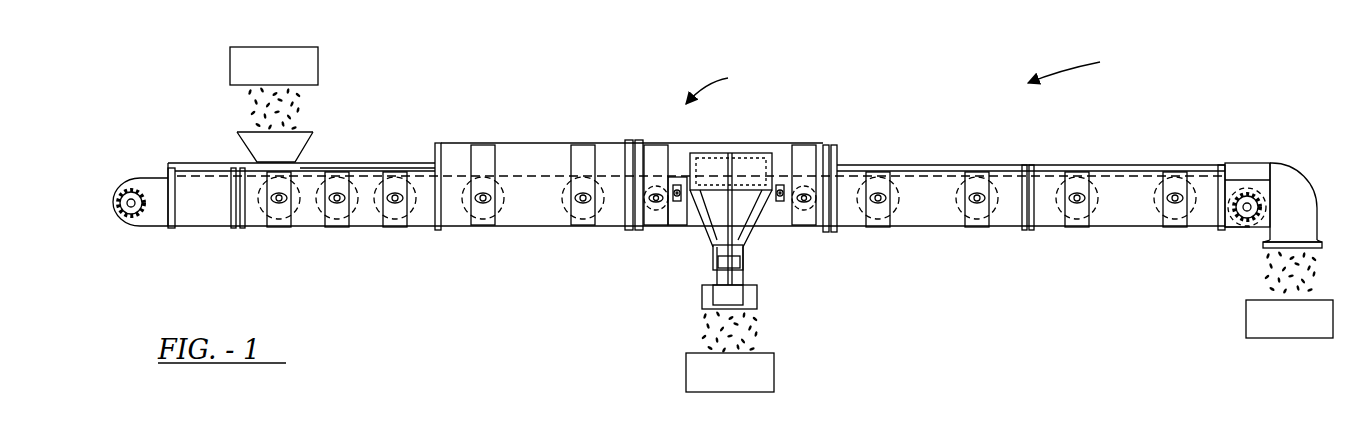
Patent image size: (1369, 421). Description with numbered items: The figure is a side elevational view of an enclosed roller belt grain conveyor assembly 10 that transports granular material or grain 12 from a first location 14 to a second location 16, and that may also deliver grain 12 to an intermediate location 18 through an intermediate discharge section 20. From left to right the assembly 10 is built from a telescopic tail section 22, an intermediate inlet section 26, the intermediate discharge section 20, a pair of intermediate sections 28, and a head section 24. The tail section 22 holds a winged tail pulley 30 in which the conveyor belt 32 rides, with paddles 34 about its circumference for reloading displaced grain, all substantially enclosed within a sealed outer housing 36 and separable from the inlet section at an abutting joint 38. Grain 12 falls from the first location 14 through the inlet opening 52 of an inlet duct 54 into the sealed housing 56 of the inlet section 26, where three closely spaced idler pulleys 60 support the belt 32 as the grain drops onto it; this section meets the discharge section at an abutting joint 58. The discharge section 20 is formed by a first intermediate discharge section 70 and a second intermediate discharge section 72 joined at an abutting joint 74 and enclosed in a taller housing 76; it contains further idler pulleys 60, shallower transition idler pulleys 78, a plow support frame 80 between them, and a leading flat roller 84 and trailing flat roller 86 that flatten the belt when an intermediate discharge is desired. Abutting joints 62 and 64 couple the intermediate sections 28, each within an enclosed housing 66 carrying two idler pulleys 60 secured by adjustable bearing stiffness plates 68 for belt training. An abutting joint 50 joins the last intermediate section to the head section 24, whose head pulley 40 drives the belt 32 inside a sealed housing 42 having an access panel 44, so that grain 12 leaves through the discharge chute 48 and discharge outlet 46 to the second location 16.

The grain conveyor assembly 10 is at (1081, 66).
The grain 12 is at (296, 102).
The first location 14 is at (310, 58).
The second location 16 is at (1257, 322).
The intermediate location 18 is at (768, 375).
The intermediate discharge section 20 is at (720, 83).
The telescopic tail section 22 is at (205, 220).
The head section 24 is at (1256, 170).
The intermediate inlet section 26 is at (307, 218).
The intermediate section 28 is at (936, 210).
The winged tail pulley 30 is at (141, 210).
The conveyor belt 32 is at (200, 174).
The paddles 34 is at (118, 218).
The sealed outer housing 36 is at (218, 163).
The abutting joint 38 is at (237, 228).
The head pulley 40 is at (1250, 226).
The sealed housing 42 is at (1237, 163).
The access panel 44 is at (1232, 221).
The discharge outlet 46 is at (1310, 257).
The discharge chute 48 is at (1307, 222).
The abutting joint 50 is at (1222, 165).
The inlet opening 52 is at (300, 128).
The inlet duct 54 is at (290, 148).
The sealed housing 56 is at (402, 165).
The abutting joint 58 is at (437, 225).
The idler pulleys 60 is at (385, 208).
The abutting joint 62 is at (829, 226).
The abutting joint 64 is at (1027, 226).
The enclosed housing 66 is at (930, 165).
The bearing stiffness plates 68 is at (880, 222).
The first intermediate discharge section 70 is at (526, 215).
The second intermediate discharge section 72 is at (786, 150).
The abutting joint 74 is at (630, 226).
The housing 76 is at (513, 143).
The transition idler pulleys 78 is at (655, 212).
The plow support frame 80 is at (775, 215).
The leading flat roller 84 is at (678, 201).
The trailing flat roller 86 is at (782, 185).